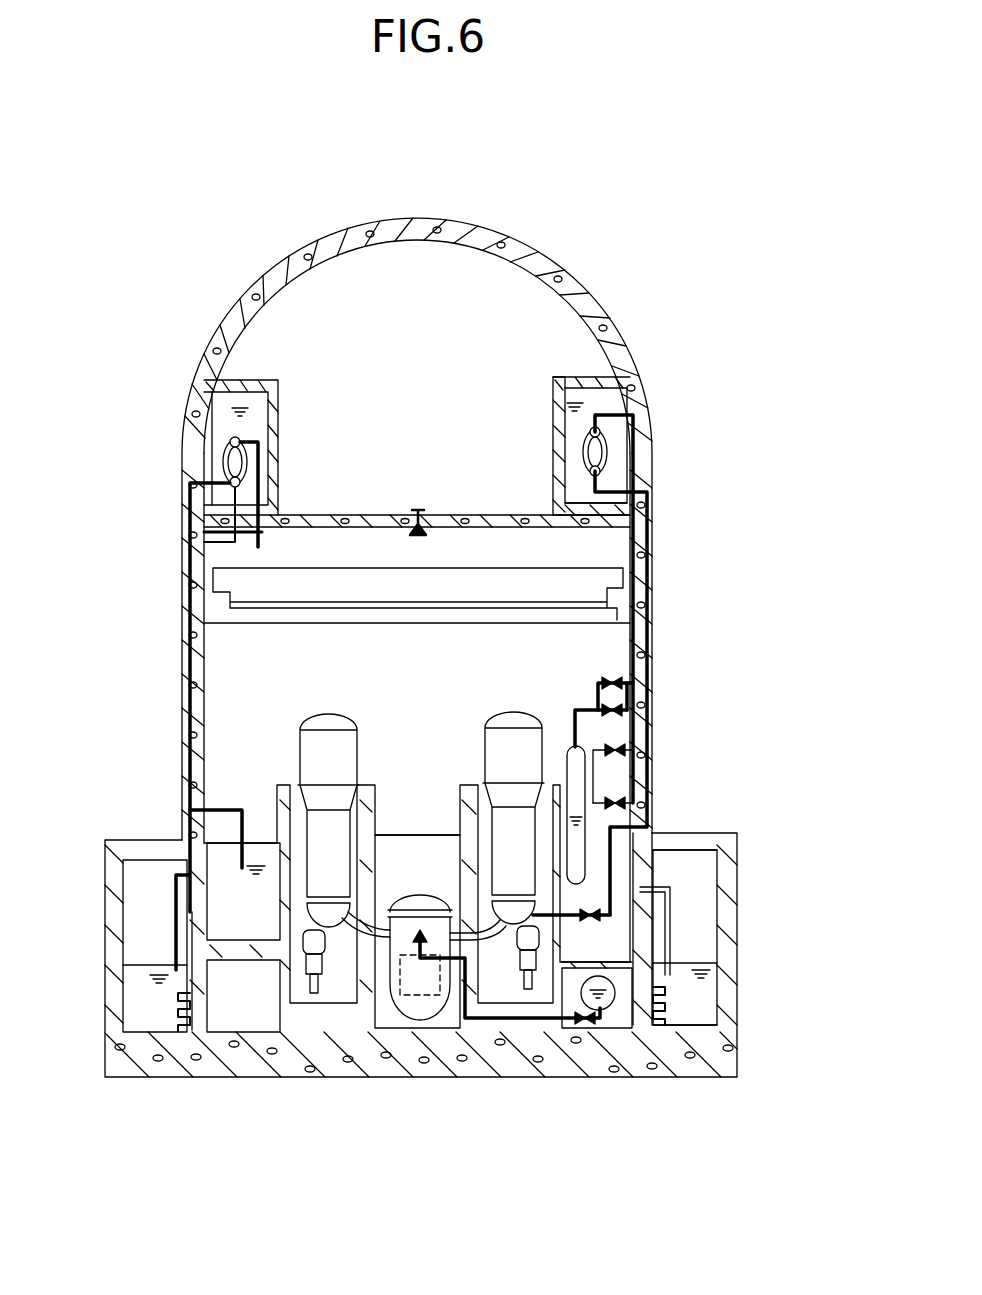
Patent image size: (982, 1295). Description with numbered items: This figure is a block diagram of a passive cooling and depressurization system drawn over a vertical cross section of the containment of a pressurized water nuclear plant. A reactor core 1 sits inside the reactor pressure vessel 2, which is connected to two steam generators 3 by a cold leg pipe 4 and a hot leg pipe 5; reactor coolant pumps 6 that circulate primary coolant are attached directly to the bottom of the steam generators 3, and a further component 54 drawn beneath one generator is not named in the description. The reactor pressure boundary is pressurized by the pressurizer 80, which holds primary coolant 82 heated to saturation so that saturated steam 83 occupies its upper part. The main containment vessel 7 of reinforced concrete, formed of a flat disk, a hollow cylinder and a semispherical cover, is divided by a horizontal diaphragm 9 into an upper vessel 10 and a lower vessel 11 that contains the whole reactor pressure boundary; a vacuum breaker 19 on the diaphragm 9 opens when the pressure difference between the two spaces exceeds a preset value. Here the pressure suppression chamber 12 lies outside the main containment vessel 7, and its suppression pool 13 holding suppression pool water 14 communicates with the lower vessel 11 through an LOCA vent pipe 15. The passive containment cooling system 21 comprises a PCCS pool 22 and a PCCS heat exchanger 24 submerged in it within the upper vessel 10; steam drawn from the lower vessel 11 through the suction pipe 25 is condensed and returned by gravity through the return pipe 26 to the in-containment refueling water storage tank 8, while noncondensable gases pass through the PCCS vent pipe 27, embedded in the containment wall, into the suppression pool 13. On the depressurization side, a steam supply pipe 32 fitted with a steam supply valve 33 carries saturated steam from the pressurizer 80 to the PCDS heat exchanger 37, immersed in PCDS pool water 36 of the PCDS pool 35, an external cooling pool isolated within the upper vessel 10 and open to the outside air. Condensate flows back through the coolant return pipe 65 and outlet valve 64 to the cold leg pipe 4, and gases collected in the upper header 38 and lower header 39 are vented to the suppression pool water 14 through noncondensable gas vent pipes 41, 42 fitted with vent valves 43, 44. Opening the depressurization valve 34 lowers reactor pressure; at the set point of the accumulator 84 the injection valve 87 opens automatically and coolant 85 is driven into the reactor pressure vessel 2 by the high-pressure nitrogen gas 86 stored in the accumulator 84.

The reactor core 1 is at (430, 1000).
The reactor pressure vessel 2 is at (418, 1022).
The steam generator 3 is at (328, 718).
The cold leg pipe 4 is at (478, 940).
The hot leg pipe 5 is at (350, 930).
The reactor coolant pump 6 is at (313, 993).
The main containment vessel 7 is at (215, 330).
The in-containment refueling water storage tank 8 is at (230, 905).
The diaphragm 9 is at (541, 430).
The upper vessel 10 is at (575, 345).
The lower vessel 11 is at (230, 688).
The pressure suppression chamber 12 is at (135, 875).
The suppression pool 13 is at (130, 995).
The suppression pool water 14 is at (150, 1010).
The LOCA vent pipe 15 is at (192, 1032).
The vacuum breaker 19 is at (418, 510).
The passive containment cooling system 21 is at (228, 423).
The PCCS pool 22 is at (205, 432).
The PCCS heat exchanger 24 is at (222, 462).
The suction pipe 25 is at (283, 470).
The return pipe 26 is at (193, 800).
The PCCS vent pipe 27 is at (193, 815).
The steam supply pipe 32 is at (600, 410).
The steam supply valve 33 is at (612, 680).
The depressurization valve 34 is at (612, 707).
The PCDS pool 35 is at (545, 420).
The PCDS pool water 36 is at (572, 502).
The PCDS heat exchanger 37 is at (614, 452).
The upper header 38 is at (612, 395).
The lower header 39 is at (590, 488).
The noncondensable gas vent pipe 41 is at (618, 422).
The noncondensable gas vent pipe 42 is at (620, 485).
The vent valve 43 is at (616, 748).
The vent valve 44 is at (616, 803).
The coolant pump 54 is at (535, 990).
The outlet valve 64 is at (660, 930).
The coolant return pipe 65 is at (640, 900).
The pressurizer 80 is at (690, 852).
The primary coolant 82 is at (650, 872).
The saturated steam 83 is at (577, 782).
The accumulator 84 is at (612, 1003).
The coolant 85 is at (603, 1010).
The high-pressure nitrogen gas 86 is at (700, 998).
The injection valve 87 is at (583, 1022).